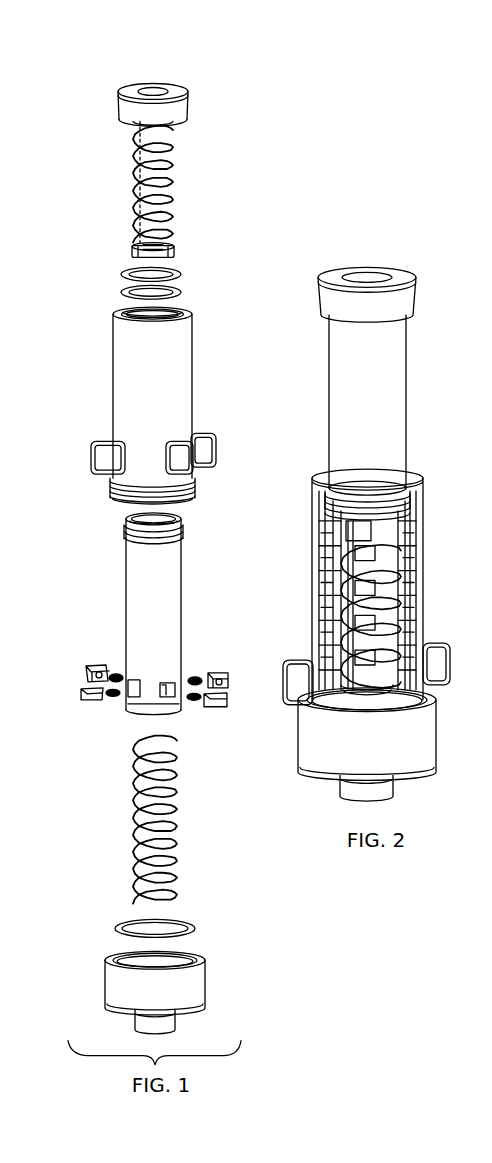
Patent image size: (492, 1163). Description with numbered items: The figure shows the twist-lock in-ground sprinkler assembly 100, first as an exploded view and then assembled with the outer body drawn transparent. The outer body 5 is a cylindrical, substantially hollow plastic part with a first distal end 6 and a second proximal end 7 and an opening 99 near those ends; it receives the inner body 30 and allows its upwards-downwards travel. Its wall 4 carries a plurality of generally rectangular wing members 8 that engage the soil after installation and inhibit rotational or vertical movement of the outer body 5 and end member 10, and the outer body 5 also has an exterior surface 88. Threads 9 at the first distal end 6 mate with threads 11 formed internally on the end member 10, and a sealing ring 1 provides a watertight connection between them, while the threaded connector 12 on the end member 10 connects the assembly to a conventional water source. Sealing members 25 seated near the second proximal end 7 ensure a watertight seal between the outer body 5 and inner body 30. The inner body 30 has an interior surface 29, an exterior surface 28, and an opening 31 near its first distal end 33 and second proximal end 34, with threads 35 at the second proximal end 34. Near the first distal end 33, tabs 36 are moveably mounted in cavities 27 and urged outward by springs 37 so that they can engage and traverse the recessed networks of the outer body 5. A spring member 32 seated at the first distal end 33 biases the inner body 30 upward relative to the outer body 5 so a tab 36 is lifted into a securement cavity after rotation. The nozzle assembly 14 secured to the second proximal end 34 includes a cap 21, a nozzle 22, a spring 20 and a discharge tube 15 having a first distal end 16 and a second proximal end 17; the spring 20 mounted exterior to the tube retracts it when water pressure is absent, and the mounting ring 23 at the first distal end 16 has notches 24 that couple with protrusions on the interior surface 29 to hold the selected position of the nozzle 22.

In FIG. 2, the in-ground sprinkler assembly 100 is at (269, 247).
In FIG. 1, the sealing ring 1 is at (191, 925).
In FIG. 1, the wall 4 is at (110, 377).
In FIG. 1, the outer body 5 is at (190, 356).
In FIG. 2, the outer body 5 is at (421, 581).
In FIG. 1, the first distal end 6 is at (207, 477).
In FIG. 1, the second proximal end 7 is at (100, 309).
In FIG. 1, the wing members 8 is at (96, 441).
In FIG. 2, the wing members 8 is at (486, 468).
In FIG. 1, the threads 9 is at (108, 486).
In FIG. 1, the end member 10 is at (206, 979).
In FIG. 2, the end member 10 is at (434, 739).
In FIG. 1, the threads 11 is at (178, 962).
In FIG. 1, the threaded connector 12 is at (172, 1027).
In FIG. 1, the nozzle assembly 14 is at (100, 87).
In FIG. 1, the discharge tube 15 is at (177, 157).
In FIG. 1, the first distal end 16 is at (180, 238).
In FIG. 1, the second proximal end 17 is at (118, 118).
In FIG. 1, the spring 20 is at (134, 170).
In FIG. 1, the cap 21 is at (186, 96).
In FIG. 2, the cap 21 is at (413, 296).
In FIG. 1, the nozzle 22 is at (150, 88).
In FIG. 1, the mounting ring 23 is at (130, 246).
In FIG. 1, the notches 24 is at (170, 252).
In FIG. 1, the sealing members 25 is at (178, 272).
In FIG. 1, the cavities 27 is at (127, 680).
In FIG. 1, the exterior surface 28 is at (166, 598).
In FIG. 1, the interior surface 29 is at (166, 521).
In FIG. 1, the inner body 30 is at (123, 578).
In FIG. 2, the inner body 30 is at (403, 396).
In FIG. 1, the opening 31 is at (166, 502).
In FIG. 1, the spring member 32 is at (172, 808).
In FIG. 1, the first distal end 33 is at (124, 706).
In FIG. 1, the second proximal end 34 is at (193, 536).
In FIG. 1, the threads 35 is at (123, 528).
In FIG. 1, the tabs 36 is at (84, 670).
In FIG. 1, the springs 37 is at (113, 672).
In FIG. 1, the exterior surface 88 is at (178, 389).
In FIG. 1, the opening 99 is at (136, 307).